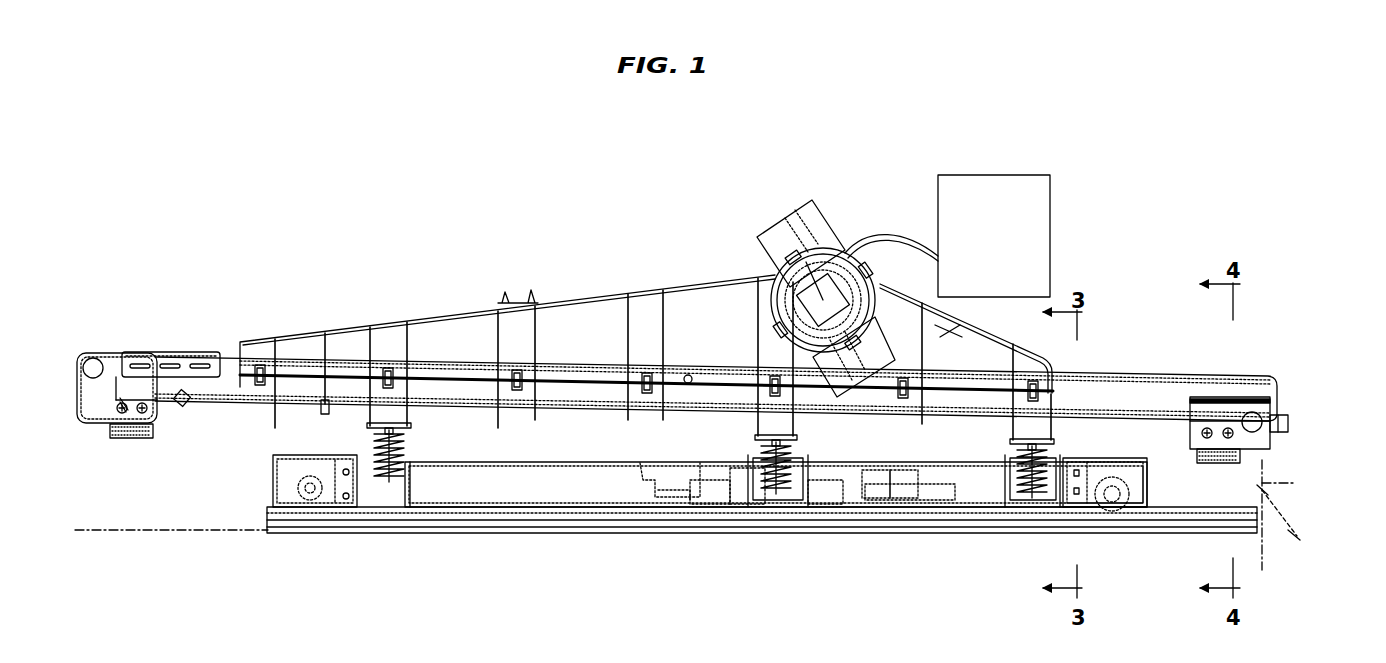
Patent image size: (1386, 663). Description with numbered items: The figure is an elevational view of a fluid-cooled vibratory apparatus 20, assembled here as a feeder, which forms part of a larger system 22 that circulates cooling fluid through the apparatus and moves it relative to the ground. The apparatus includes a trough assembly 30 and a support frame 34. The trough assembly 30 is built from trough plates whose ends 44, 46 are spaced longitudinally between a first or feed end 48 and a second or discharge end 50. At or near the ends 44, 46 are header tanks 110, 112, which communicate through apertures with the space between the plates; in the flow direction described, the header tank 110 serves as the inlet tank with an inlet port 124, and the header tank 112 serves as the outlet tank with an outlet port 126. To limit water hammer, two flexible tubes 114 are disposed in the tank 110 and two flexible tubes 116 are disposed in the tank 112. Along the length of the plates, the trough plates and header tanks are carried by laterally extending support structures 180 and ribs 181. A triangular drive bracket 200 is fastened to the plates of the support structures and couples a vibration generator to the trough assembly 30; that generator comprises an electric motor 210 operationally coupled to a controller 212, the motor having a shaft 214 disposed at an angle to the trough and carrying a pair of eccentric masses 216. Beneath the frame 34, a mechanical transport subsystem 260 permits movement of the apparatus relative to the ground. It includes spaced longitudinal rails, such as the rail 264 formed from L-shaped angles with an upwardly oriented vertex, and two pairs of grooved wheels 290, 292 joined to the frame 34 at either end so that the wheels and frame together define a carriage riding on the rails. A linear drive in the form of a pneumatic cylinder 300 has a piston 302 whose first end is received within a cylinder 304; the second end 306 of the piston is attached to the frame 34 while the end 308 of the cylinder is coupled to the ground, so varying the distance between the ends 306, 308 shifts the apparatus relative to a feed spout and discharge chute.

The fluid-cooled vibratory apparatus 20 is at (1100, 370).
The system 22 is at (1118, 245).
The trough assembly 30 is at (1207, 392).
The support frame 34 is at (455, 497).
The end 44 is at (124, 352).
The end 46 is at (1279, 390).
The first end 48 is at (172, 330).
The second end 50 is at (1275, 360).
The header tank 110 is at (1258, 441).
The header tank 112 is at (92, 424).
The flexible tube 114 is at (1218, 464).
The flexible tube 116 is at (128, 414).
The port 124 is at (1290, 424).
The port 126 is at (90, 352).
The support structure 180 is at (416, 406).
The rib 181 is at (540, 405).
The drive bracket 200 is at (950, 331).
The electric motor 210 is at (830, 276).
The controller 212 is at (1040, 194).
The shaft 214 is at (792, 207).
The eccentric mass 216 is at (760, 238).
The mechanical transport subsystem 260 is at (1298, 515).
The rail 264 is at (1262, 522).
The wheel 290 is at (300, 498).
The wheel 292 is at (1112, 497).
The pneumatic cylinder 300 is at (777, 548).
The piston 302 is at (697, 503).
The cylinder 304 is at (833, 502).
The second end 306 is at (656, 503).
The end 308 is at (886, 518).